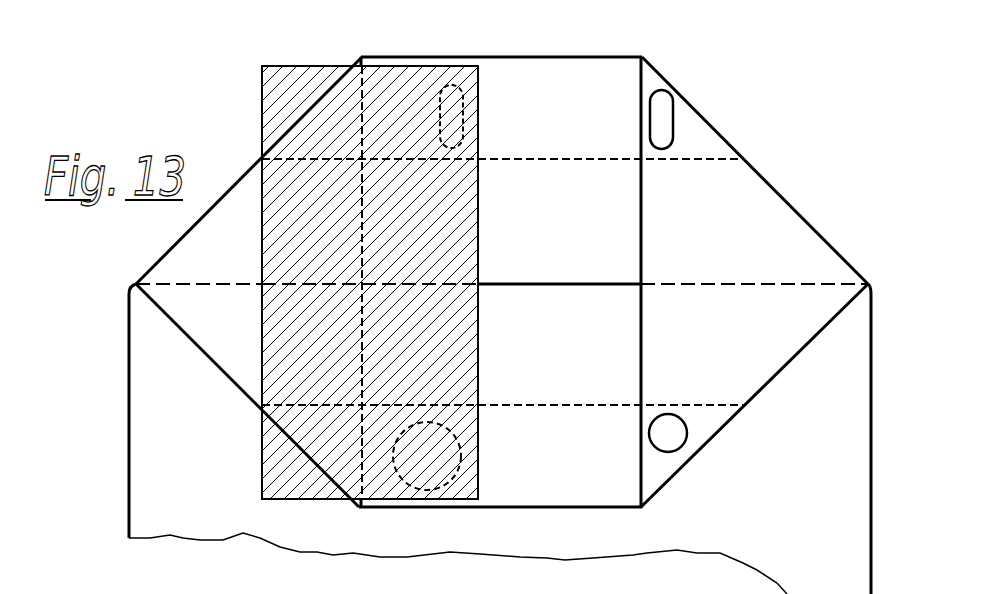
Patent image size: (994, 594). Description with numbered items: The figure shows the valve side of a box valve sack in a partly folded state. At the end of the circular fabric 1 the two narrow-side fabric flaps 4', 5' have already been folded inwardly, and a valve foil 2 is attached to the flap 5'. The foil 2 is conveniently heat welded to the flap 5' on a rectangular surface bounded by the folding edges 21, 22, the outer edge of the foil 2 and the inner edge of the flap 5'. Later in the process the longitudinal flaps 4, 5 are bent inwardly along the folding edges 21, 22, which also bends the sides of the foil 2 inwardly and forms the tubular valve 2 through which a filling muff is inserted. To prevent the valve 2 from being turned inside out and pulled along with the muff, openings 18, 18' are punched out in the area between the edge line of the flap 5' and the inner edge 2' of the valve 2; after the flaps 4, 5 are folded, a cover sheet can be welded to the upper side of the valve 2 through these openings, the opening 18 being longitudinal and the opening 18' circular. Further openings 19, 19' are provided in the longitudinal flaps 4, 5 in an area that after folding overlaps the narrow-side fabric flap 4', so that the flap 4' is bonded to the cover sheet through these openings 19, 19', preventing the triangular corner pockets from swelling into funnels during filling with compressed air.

The circular fabric 1 is at (175, 420).
The valve foil 2 is at (327, 282).
The inner edge of the valve 2' is at (522, 282).
The longitudinal flap 4 is at (501, 260).
The narrow-side fabric flap 4' is at (755, 170).
The longitudinal flap 5 is at (502, 305).
The narrow-side fabric flap 5' is at (224, 208).
The opening 18 is at (488, 114).
The opening 18' is at (471, 456).
The opening 19 is at (703, 117).
The opening 19' is at (708, 448).
The folding edge 21 is at (593, 151).
The folding edge 22 is at (584, 398).